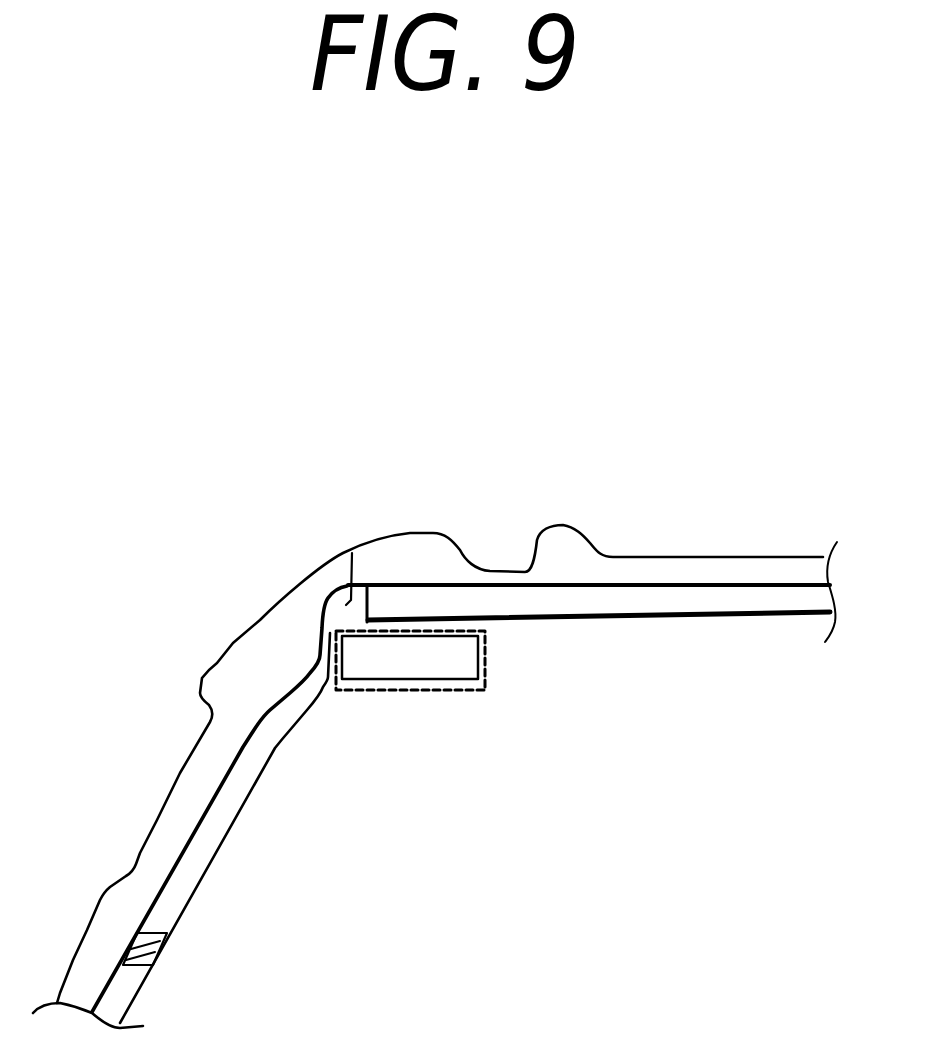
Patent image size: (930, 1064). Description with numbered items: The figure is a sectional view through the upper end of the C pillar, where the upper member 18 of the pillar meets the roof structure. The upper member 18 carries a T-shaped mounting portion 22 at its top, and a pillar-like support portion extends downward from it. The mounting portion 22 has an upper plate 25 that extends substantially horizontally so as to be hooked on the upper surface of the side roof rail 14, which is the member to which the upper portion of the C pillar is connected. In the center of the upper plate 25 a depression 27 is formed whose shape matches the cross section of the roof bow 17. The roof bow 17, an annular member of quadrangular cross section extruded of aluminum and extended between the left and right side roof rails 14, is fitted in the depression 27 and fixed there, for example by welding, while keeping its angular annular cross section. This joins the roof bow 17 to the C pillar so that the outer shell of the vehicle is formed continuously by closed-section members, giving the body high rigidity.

The mounting portion 22 is at (240, 565).
The upper member 18 is at (267, 890).
The side roof rail 14 is at (462, 655).
The roof bow 17 is at (727, 600).
The upper plate 25 is at (447, 580).
The depression 27 is at (344, 553).